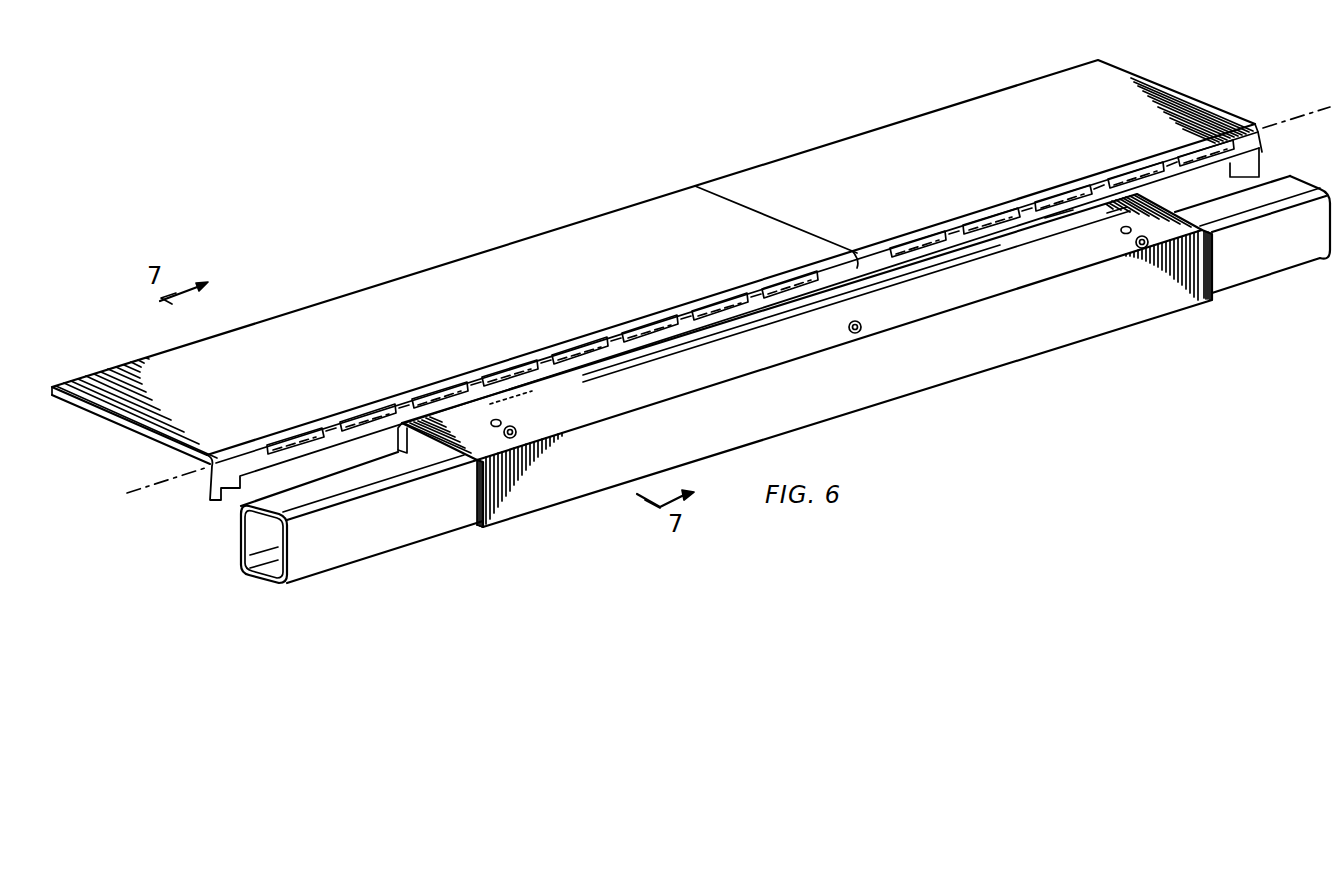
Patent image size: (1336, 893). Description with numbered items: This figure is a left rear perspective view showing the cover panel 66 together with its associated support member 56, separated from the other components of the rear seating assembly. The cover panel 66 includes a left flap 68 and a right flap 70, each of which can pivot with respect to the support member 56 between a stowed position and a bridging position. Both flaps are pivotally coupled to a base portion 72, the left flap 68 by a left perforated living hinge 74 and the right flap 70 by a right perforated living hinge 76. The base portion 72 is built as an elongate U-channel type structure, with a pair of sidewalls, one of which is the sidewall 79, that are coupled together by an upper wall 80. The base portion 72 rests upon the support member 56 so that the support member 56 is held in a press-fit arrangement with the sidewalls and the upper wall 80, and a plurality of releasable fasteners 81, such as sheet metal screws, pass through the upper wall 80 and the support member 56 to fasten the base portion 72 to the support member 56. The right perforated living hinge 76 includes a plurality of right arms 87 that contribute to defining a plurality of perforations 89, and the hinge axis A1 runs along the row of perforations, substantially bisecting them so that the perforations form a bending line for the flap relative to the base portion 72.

The support member 56 is at (336, 548).
The cover panel 66 is at (685, 263).
The left flap 68 is at (290, 328).
The right flap 70 is at (888, 142).
The base portion 72 is at (670, 362).
The left perforated living hinge 74 is at (506, 336).
The right perforated living hinge 76 is at (1012, 172).
The sidewall 79 is at (1116, 302).
The upper wall 80 is at (756, 358).
The releasable fasteners 81 is at (518, 434).
The right arms 87 is at (868, 242).
The perforations 89 is at (912, 240).
The hinge axis A1 is at (132, 500).